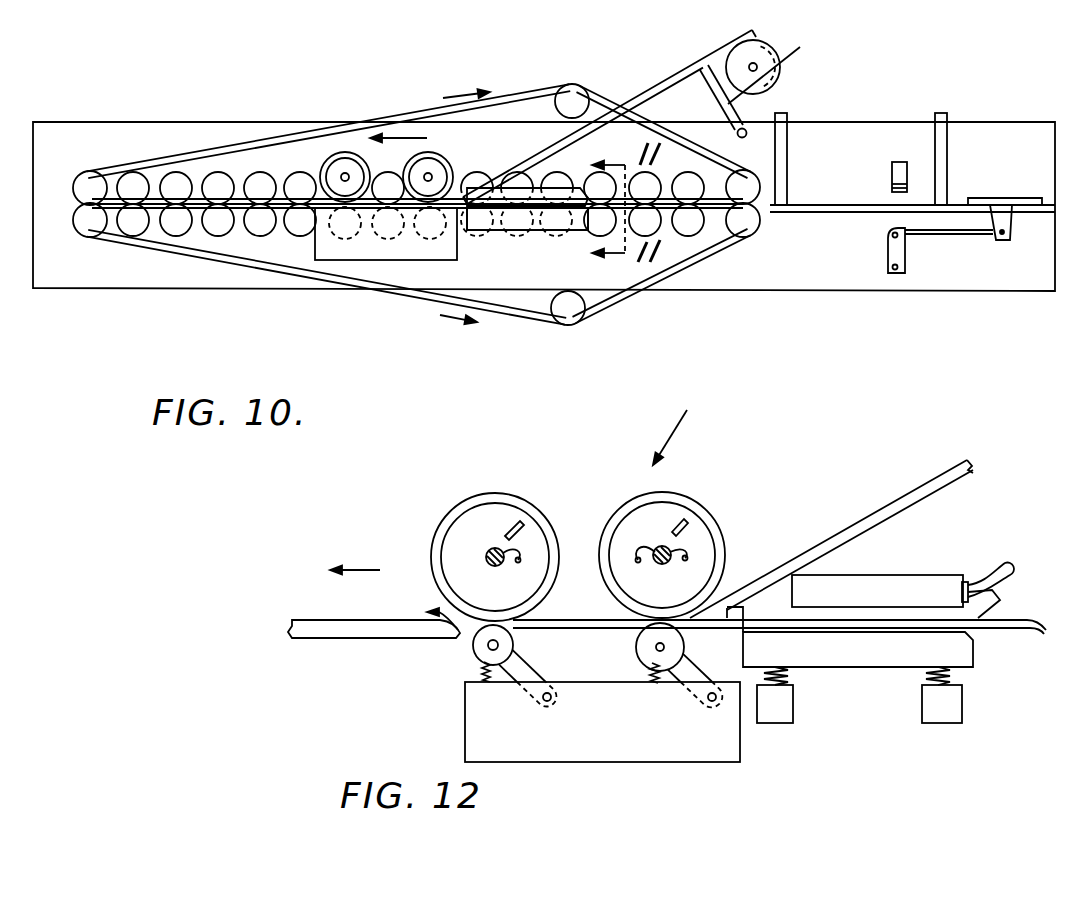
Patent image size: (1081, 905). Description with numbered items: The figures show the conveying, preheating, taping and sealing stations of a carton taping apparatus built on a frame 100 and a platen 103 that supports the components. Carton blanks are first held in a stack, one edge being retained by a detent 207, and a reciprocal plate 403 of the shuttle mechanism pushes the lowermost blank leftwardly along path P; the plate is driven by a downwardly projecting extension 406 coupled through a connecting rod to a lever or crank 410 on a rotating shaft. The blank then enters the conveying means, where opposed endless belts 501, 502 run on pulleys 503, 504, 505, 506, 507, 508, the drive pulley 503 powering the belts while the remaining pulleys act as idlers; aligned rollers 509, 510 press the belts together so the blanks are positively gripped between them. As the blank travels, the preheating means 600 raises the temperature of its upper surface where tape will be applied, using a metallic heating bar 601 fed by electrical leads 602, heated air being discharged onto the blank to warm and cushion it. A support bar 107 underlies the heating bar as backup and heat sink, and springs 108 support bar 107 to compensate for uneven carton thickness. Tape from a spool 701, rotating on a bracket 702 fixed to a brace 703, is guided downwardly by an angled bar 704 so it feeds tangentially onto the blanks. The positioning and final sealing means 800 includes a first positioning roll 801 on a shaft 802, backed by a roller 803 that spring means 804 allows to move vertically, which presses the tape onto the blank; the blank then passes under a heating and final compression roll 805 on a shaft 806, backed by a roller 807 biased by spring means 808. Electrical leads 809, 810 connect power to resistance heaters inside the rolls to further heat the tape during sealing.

In FIG. 10, the endless belt 501 is at (418, 110).
In FIG. 10, the endless belt 502 is at (403, 293).
In FIG. 10, the drive pulley 503 is at (92, 182).
In FIG. 10, the idler pulley 504 is at (572, 98).
In FIG. 10, the idler pulley 505 is at (750, 180).
In FIG. 10, the idler pulley 506 is at (755, 233).
In FIG. 10, the idler pulley 507 is at (585, 320).
In FIG. 10, the idler pulley 508 is at (90, 228).
In FIG. 10, the aligned rollers 509 is at (178, 187).
In FIG. 10, the aligned rollers 510 is at (250, 248).
In FIG. 10, the preheating means 600 is at (544, 260).
In FIG. 12, the preheating means 600 is at (910, 561).
In FIG. 10, the metallic heating bar 601 is at (533, 193).
In FIG. 12, the metallic heating bar 601 is at (957, 573).
In FIG. 10, the electrical leads 602 is at (580, 184).
In FIG. 10, the spool of tape 701 is at (777, 57).
In FIG. 10, the bracket 702 is at (720, 58).
In FIG. 10, the brace 703 is at (730, 100).
In FIG. 10, the bar 704 is at (586, 114).
In FIG. 12, the bar 704 is at (867, 523).
In FIG. 10, the first positioning roll 801 is at (440, 172).
In FIG. 12, the first positioning roll 801 is at (692, 510).
In FIG. 12, the shaft 802 is at (672, 568).
In FIG. 12, the roller 803 is at (640, 647).
In FIG. 12, the spring means 804 is at (652, 667).
In FIG. 10, the heating and final compression roll 805 is at (330, 167).
In FIG. 12, the heating and final compression roll 805 is at (473, 522).
In FIG. 12, the shaft 806 is at (477, 557).
In FIG. 12, the roller 807 is at (470, 647).
In FIG. 12, the spring means 808 is at (483, 670).
In FIG. 12, the electrical lead 809 is at (677, 527).
In FIG. 12, the electrical lead 810 is at (513, 523).
In FIG. 12, the positioning and final sealing means 800 is at (690, 430).
In FIG. 12, the platen 103 is at (318, 630).
In FIG. 12, the support bar 107 is at (903, 648).
In FIG. 12, the springs 108 is at (953, 680).
In FIG. 12, the frame 100 is at (950, 708).
In FIG. 10, the detent 207 is at (917, 148).
In FIG. 10, the reciprocal plate 403 is at (1022, 177).
In FIG. 10, the extension 406 is at (1008, 232).
In FIG. 10, the lever or crank 410 is at (897, 254).
In FIG. 10, the path P is at (404, 139).